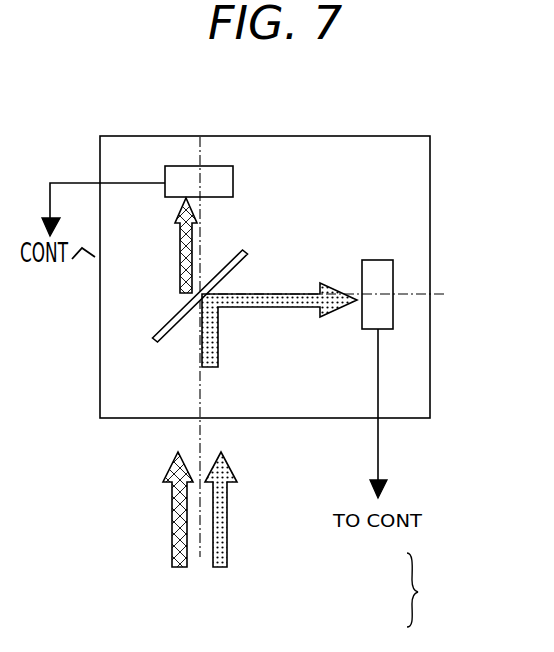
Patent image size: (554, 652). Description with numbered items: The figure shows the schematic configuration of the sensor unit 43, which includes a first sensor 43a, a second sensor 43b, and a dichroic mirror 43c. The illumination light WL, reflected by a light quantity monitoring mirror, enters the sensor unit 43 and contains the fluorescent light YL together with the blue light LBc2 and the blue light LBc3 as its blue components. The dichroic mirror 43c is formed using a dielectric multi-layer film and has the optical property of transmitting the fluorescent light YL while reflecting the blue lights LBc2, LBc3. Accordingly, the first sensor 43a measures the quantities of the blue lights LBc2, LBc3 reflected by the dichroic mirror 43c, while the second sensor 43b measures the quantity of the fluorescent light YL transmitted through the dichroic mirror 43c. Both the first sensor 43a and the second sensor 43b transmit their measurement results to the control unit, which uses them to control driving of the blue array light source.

The sensor unit 43 is at (430, 163).
The first sensor 43a is at (383, 318).
The second sensor 43b is at (216, 179).
The dichroic mirror 43c is at (163, 330).
The fluorescent light YL is at (190, 230).
The blue light LBc2 is at (255, 306).
The blue light LBc3 is at (225, 553).
The illumination light WL is at (429, 590).